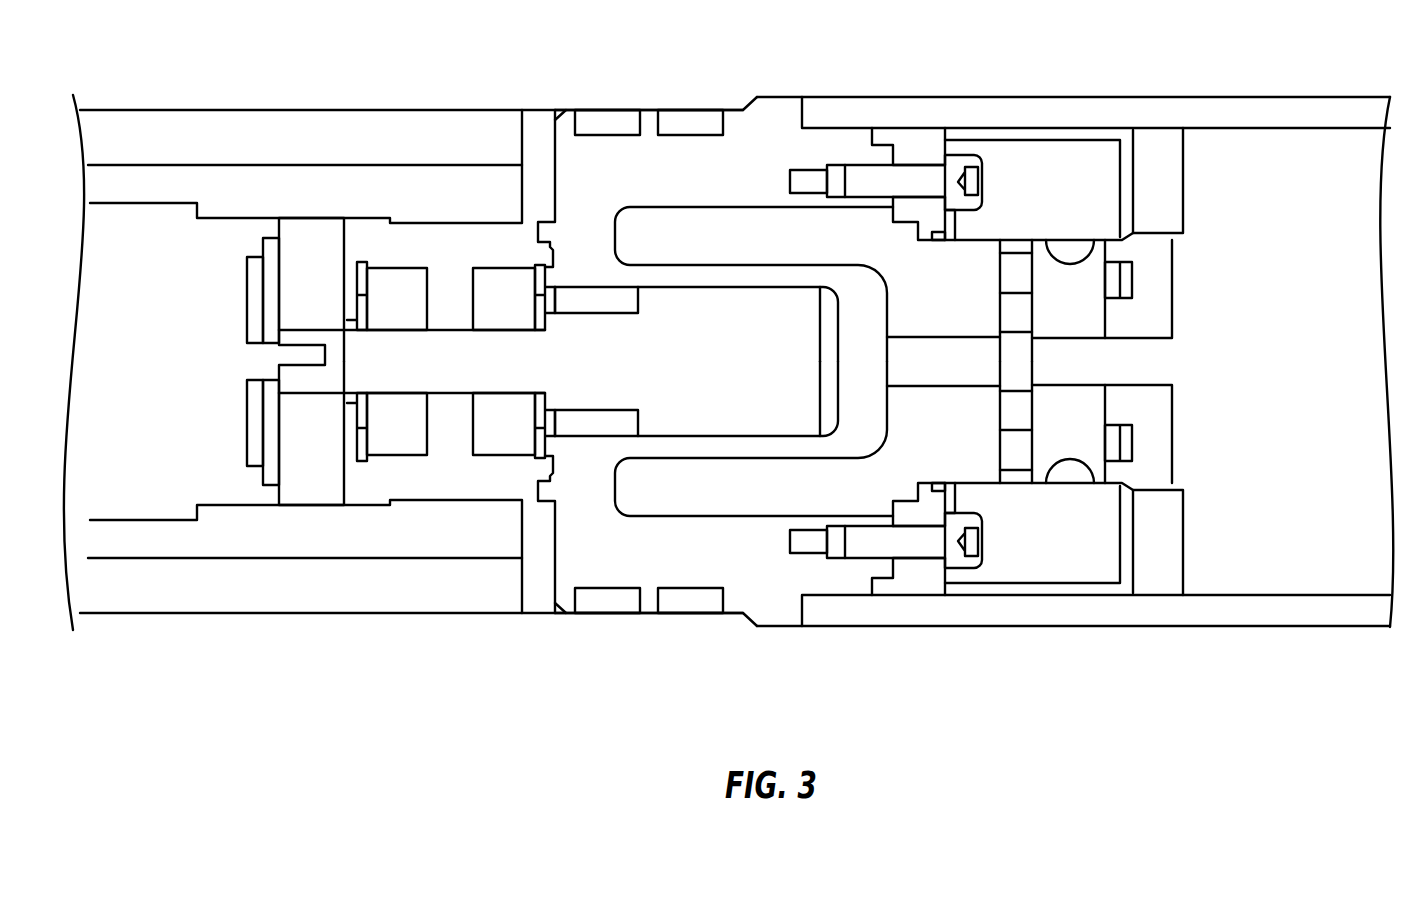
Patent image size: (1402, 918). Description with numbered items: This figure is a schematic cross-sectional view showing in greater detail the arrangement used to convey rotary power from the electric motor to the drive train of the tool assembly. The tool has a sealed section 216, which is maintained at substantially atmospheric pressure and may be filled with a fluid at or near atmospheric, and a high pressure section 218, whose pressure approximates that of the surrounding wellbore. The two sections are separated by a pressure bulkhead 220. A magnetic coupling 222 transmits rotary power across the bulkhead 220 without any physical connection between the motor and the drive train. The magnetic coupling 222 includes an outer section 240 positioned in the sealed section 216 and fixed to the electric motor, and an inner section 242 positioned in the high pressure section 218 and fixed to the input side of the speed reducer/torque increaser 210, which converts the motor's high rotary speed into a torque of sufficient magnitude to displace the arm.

The speed reducer/torque increaser 210 is at (203, 180).
The sealed section 216 is at (1220, 143).
The high pressure section 218 is at (190, 130).
The pressure bulkhead 220 is at (773, 112).
The magnetic coupling 222 is at (983, 237).
The outer section 240 is at (713, 497).
The inner section 242 is at (600, 298).